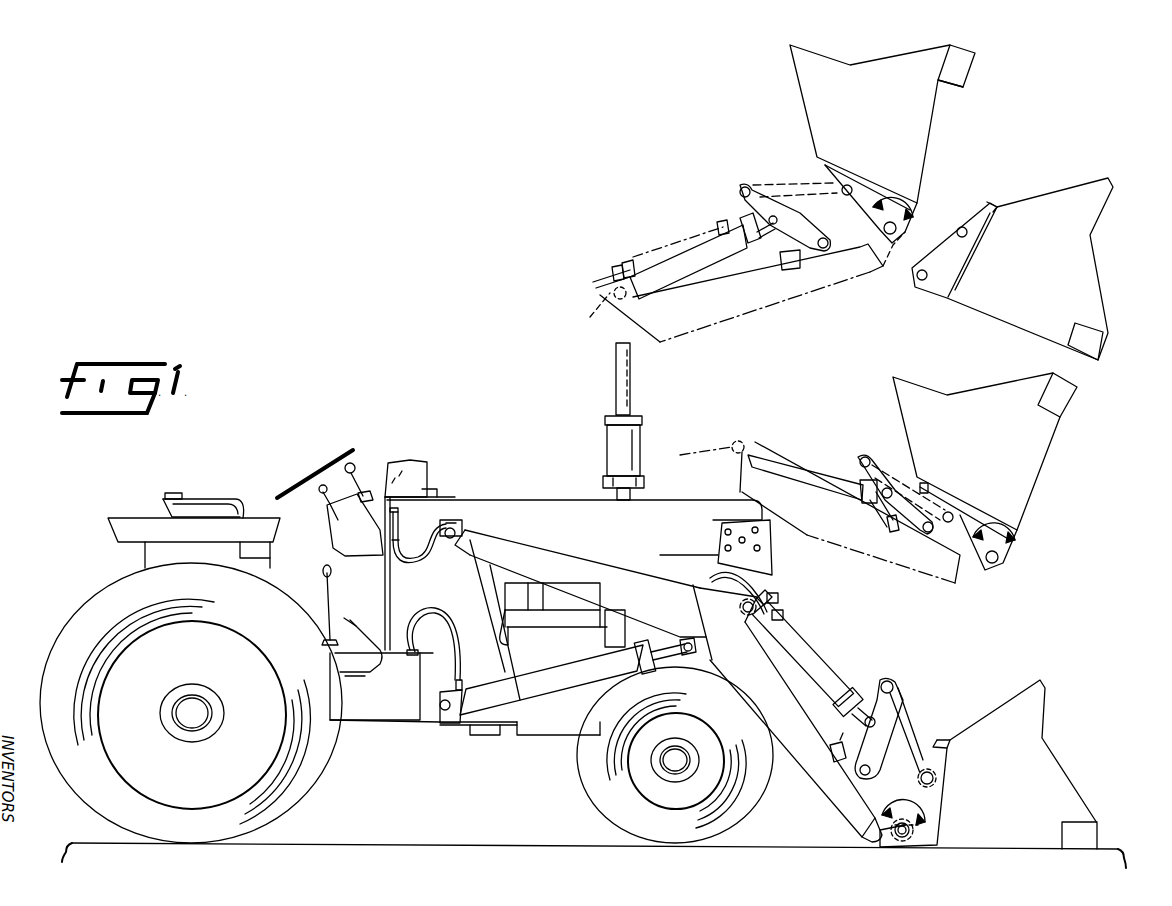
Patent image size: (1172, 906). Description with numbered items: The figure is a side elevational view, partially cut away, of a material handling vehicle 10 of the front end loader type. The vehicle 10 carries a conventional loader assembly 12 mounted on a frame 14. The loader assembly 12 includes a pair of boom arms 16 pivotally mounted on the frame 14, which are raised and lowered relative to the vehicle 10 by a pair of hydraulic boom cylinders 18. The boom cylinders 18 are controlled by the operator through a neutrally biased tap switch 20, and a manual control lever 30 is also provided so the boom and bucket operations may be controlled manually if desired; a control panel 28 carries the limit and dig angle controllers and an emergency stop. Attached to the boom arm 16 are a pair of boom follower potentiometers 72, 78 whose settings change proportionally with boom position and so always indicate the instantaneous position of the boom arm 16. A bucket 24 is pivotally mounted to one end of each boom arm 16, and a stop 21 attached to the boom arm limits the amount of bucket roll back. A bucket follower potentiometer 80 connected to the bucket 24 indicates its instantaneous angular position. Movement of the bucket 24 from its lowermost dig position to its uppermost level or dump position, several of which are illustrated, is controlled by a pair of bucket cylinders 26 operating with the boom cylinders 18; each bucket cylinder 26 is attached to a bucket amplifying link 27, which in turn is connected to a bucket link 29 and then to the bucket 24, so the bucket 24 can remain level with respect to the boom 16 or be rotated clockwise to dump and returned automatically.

The material handling vehicle 10 is at (551, 425).
The loader assembly 12 is at (805, 618).
The frame 14 is at (423, 583).
The boom arms 16 is at (520, 545).
The hydraulic boom cylinders 18 is at (512, 725).
The tap switch 20 is at (325, 509).
The stop 21 is at (833, 777).
The bucket 24 is at (1070, 776).
The bucket cylinders 26 is at (810, 662).
The bucket amplifying link 27 is at (898, 690).
The control panel 28 is at (415, 462).
The bucket link 29 is at (912, 718).
The manual control lever 30 is at (370, 460).
The boom follower potentiometer 72 is at (450, 530).
The boom follower potentiometer 78 is at (458, 524).
The bucket follower potentiometer 80 is at (905, 838).